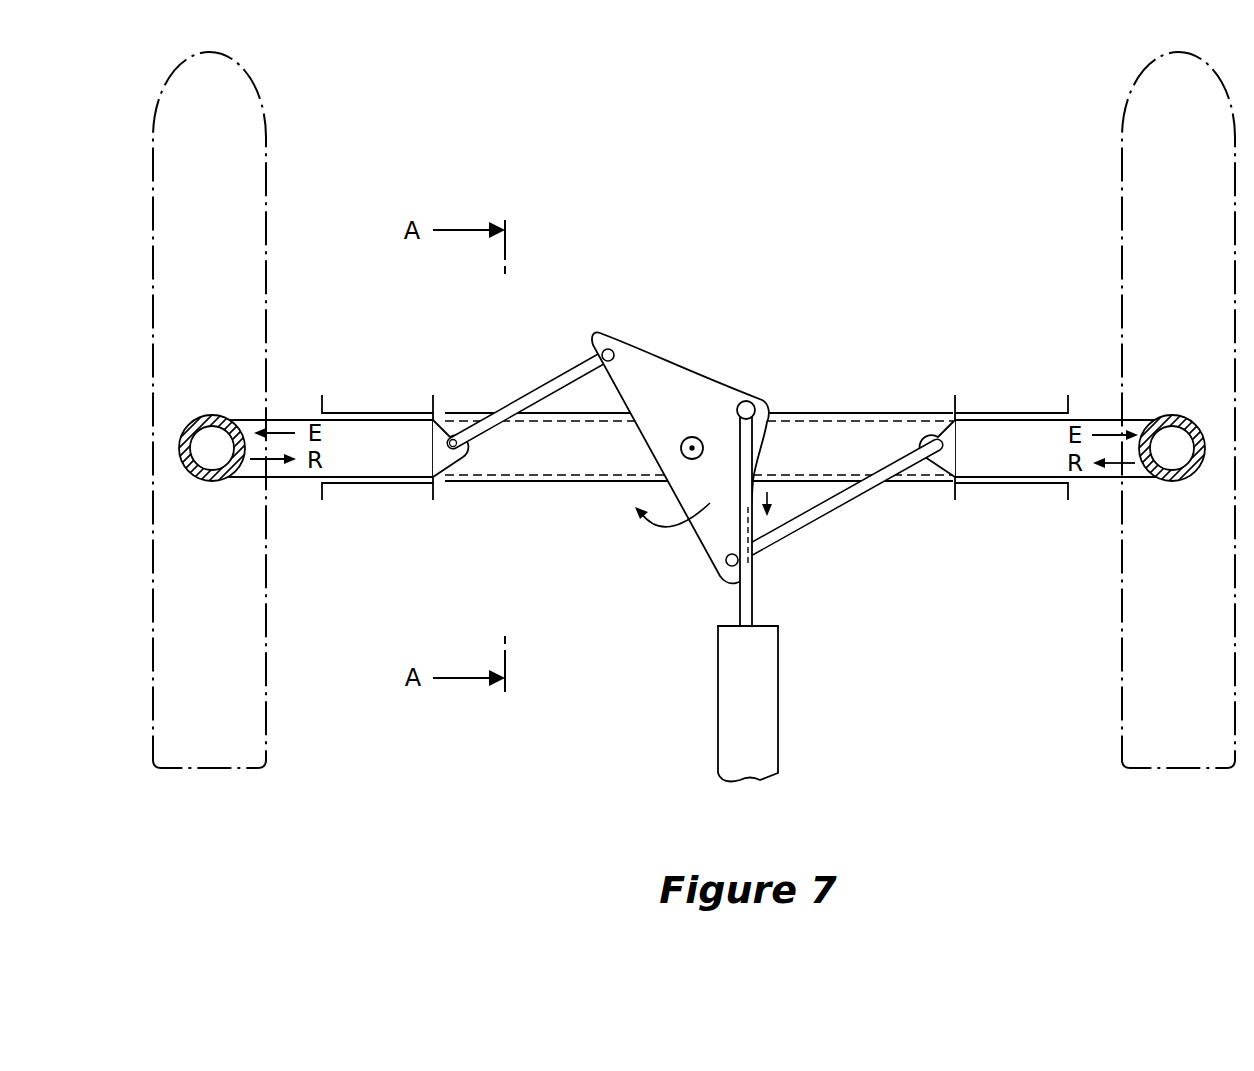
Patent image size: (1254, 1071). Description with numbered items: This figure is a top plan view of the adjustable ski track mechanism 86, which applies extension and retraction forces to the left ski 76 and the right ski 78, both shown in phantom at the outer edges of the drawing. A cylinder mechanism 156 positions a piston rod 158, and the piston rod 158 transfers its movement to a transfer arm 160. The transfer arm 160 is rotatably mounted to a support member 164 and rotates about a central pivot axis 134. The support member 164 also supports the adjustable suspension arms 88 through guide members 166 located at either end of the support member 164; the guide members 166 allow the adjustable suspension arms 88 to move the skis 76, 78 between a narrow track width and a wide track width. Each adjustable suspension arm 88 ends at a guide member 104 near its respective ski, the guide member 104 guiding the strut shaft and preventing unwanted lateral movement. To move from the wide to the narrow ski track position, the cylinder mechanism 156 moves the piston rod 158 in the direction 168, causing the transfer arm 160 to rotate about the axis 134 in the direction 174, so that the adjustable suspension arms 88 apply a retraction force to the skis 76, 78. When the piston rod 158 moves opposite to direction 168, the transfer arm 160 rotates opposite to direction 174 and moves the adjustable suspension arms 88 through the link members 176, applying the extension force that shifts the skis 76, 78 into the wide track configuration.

The left ski 76 is at (266, 670).
The right ski 78 is at (1122, 723).
The adjustable ski track mechanism 86 is at (712, 248).
The adjustable suspension arms 88 is at (288, 477).
The guide member 104 is at (220, 413).
The central pivot axis 134 is at (692, 448).
The cylinder mechanism 156 is at (778, 703).
The piston rod 158 is at (753, 592).
The transfer arm 160 is at (700, 373).
The support member 164 is at (567, 482).
The guide members 166 is at (375, 413).
The piston rod direction 168 is at (767, 492).
The transfer arm rotation direction 174 is at (663, 527).
The link members 176 is at (552, 380).